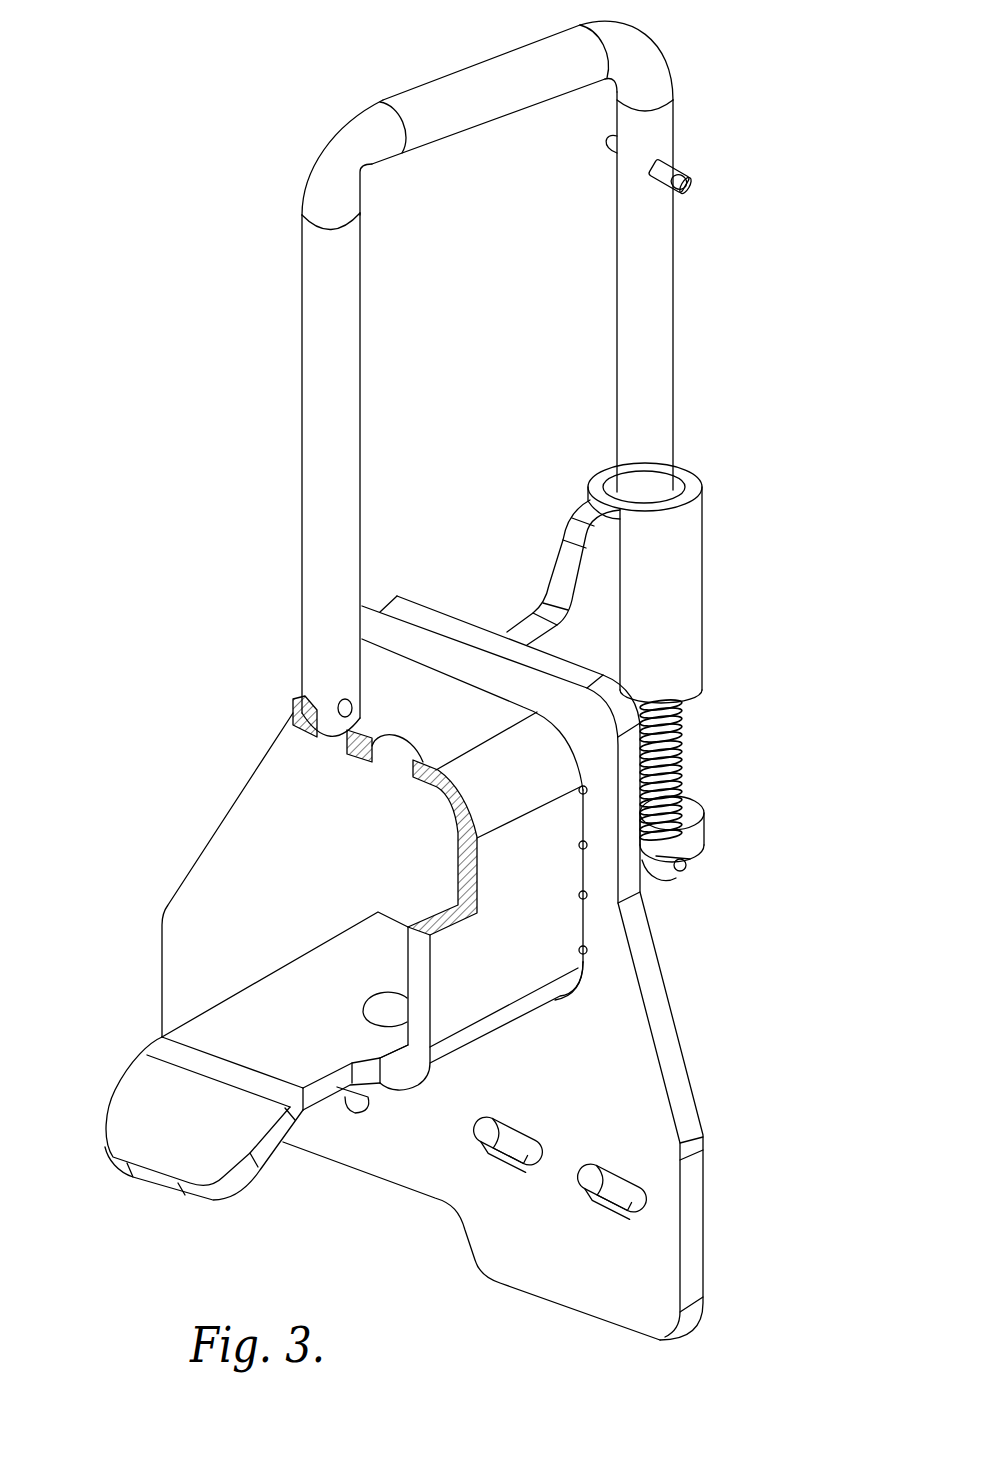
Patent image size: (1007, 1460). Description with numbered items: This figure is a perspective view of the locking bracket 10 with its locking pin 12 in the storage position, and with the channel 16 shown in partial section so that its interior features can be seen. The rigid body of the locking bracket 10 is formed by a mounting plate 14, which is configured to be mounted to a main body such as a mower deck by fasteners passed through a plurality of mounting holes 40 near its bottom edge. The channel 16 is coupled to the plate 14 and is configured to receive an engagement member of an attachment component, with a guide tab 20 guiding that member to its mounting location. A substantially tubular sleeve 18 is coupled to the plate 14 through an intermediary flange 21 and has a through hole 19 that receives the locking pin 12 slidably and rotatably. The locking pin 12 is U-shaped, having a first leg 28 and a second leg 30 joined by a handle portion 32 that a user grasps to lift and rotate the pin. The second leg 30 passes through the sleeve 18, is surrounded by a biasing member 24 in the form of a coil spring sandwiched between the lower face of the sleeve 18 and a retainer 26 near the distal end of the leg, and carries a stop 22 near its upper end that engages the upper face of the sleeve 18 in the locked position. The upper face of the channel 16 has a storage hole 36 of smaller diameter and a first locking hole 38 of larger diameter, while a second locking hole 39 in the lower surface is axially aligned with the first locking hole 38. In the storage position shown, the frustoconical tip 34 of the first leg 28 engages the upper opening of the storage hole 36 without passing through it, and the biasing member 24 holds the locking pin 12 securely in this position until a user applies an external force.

The locking bracket 10 is at (196, 164).
The locking pin 12 is at (528, 55).
The mounting plate 14 is at (653, 1000).
The channel 16 is at (504, 985).
The sleeve 18 is at (689, 555).
The through hole 19 is at (680, 483).
The guide tab 20 is at (141, 1093).
The intermediary flange 21 is at (596, 580).
The stop 22 is at (666, 172).
The biasing member 24 is at (667, 770).
The retainer 26 is at (689, 845).
The first leg 28 is at (324, 462).
The second leg 30 is at (656, 275).
The handle portion 32 is at (432, 93).
The tip 34 is at (317, 742).
The storage hole 36 is at (356, 727).
The first locking hole 38 is at (380, 753).
The second locking hole 39 is at (377, 1003).
The mounting holes 40 is at (360, 1100).